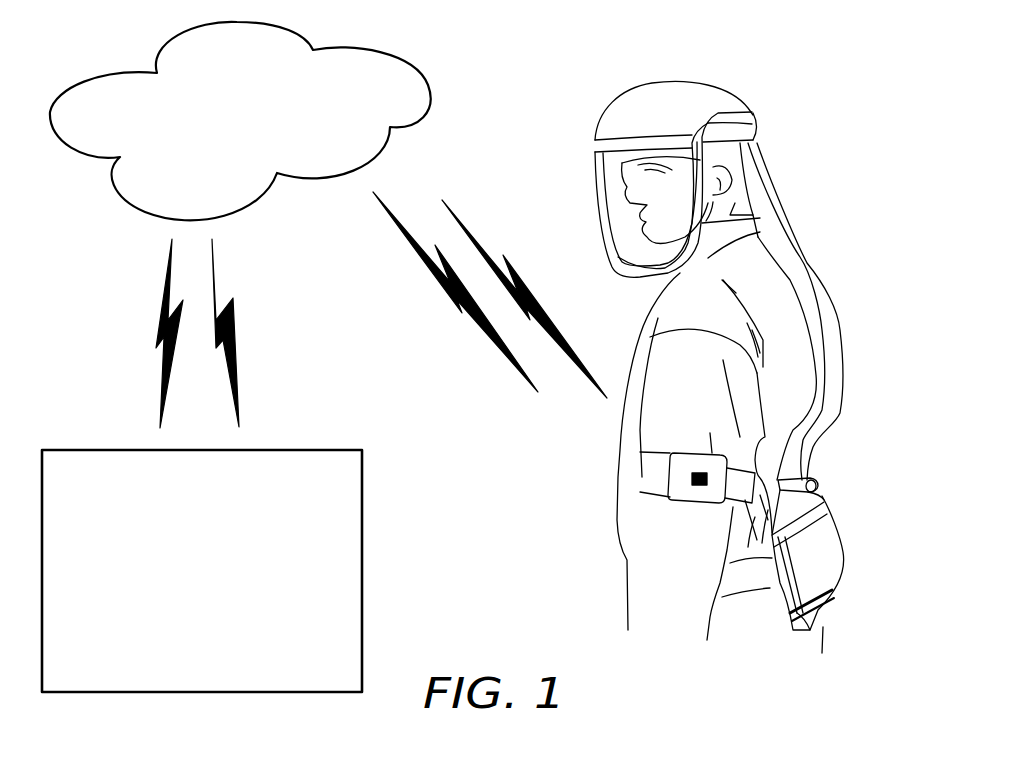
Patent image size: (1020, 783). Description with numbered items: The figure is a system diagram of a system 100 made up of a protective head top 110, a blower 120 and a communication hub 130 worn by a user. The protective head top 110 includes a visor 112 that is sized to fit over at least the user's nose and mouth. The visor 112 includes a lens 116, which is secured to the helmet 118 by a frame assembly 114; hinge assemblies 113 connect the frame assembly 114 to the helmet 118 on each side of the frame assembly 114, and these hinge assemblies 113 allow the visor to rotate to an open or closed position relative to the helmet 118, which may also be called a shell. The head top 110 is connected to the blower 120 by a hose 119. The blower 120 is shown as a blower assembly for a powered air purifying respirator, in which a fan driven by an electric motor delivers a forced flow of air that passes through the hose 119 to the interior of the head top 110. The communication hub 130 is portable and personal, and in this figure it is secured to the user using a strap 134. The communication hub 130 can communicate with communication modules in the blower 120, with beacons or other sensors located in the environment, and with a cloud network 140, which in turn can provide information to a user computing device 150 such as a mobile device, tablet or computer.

The system 100 is at (785, 55).
The protective head top 110 is at (618, 98).
The visor 112 is at (598, 190).
The hinge assemblies 113 is at (732, 128).
The frame assembly 114 is at (702, 223).
The lens 116 is at (640, 230).
The helmet 118 is at (665, 97).
The hose 119 is at (830, 320).
The blower 120 is at (830, 525).
The communication hub 130 is at (651, 445).
The strap 134 is at (650, 465).
The cloud network 140 is at (247, 124).
The user computing device 150 is at (227, 582).